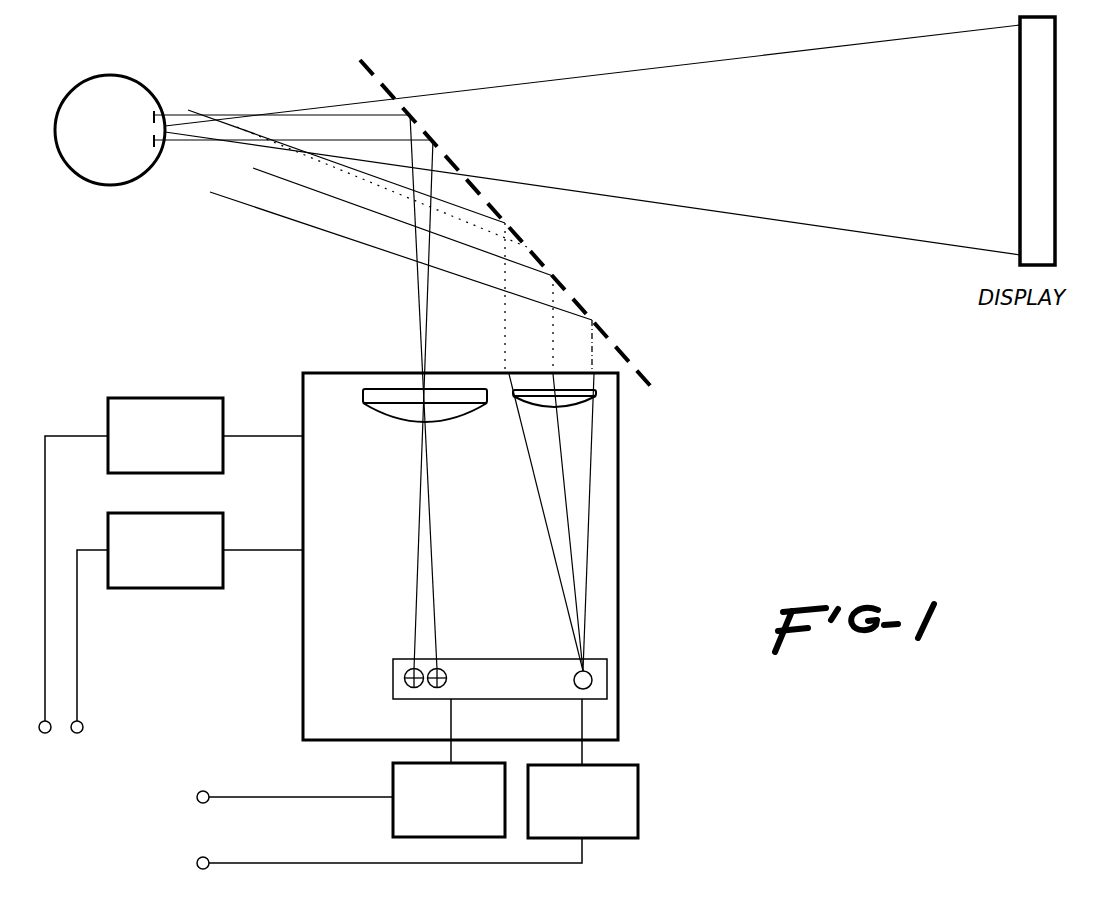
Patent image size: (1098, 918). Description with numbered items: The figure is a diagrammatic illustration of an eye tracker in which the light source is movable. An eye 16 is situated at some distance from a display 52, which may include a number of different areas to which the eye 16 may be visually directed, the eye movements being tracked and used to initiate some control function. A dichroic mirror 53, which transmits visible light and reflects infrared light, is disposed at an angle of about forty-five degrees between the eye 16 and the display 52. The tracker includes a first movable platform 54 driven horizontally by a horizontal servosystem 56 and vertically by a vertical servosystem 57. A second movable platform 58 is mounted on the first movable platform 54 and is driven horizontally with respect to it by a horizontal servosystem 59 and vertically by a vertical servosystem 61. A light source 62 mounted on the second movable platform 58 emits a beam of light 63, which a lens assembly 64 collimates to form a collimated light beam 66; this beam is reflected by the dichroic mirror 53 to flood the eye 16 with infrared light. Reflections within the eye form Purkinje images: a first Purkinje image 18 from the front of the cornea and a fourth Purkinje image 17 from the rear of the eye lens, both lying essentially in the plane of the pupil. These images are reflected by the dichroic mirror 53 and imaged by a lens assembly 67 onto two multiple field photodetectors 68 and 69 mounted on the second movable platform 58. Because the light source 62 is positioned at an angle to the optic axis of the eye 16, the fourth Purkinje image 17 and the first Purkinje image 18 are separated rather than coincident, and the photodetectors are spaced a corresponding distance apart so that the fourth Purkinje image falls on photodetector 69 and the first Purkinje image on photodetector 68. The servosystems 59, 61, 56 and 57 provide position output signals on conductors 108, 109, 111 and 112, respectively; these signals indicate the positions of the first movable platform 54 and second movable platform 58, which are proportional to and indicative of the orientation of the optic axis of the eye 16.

The eye 16 is at (52, 101).
The fourth Purkinje image 17 is at (142, 115).
The first Purkinje image 18 is at (142, 141).
The display 52 is at (1022, 80).
The dichroic mirror 53 is at (388, 58).
The first movable platform 54 is at (618, 608).
The horizontal servosystem 56 is at (133, 398).
The vertical servosystem 57 is at (218, 506).
The second movable platform 58 is at (607, 690).
The horizontal servosystem 59 is at (393, 775).
The vertical servosystem 61 is at (638, 782).
The light source 62 is at (591, 675).
The beam of light 63 is at (600, 562).
The lens assembly 64 is at (553, 408).
The collimated light beam 66 is at (608, 356).
The lens assembly 67 is at (460, 412).
The multiple field photodetector 68 is at (412, 688).
The multiple field photodetector 69 is at (443, 671).
The conductor 108 is at (243, 797).
The conductor 109 is at (299, 846).
The conductor 111 is at (45, 590).
The conductor 112 is at (77, 653).